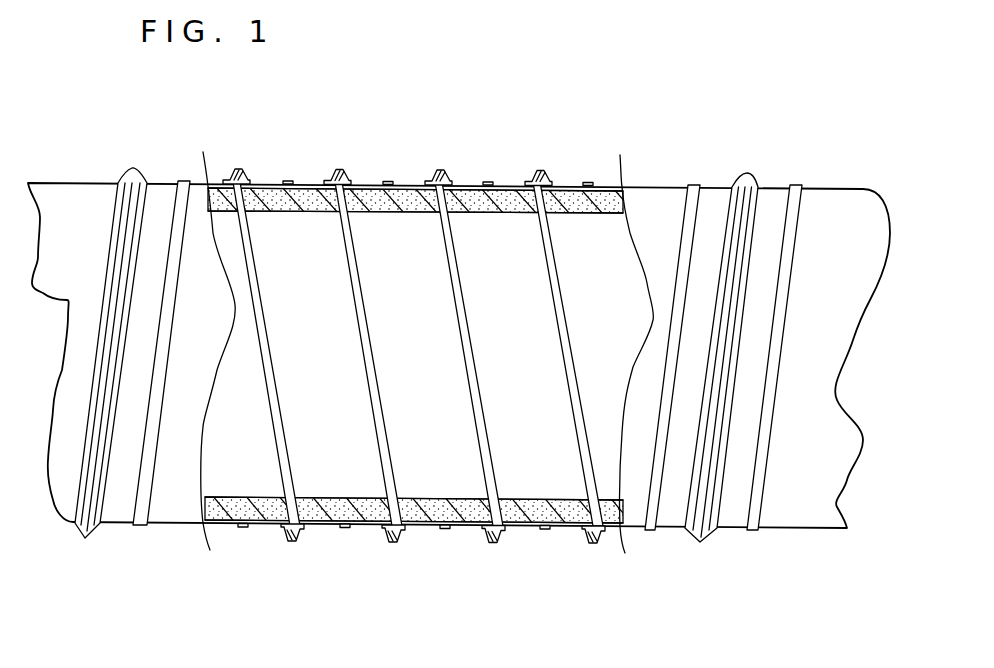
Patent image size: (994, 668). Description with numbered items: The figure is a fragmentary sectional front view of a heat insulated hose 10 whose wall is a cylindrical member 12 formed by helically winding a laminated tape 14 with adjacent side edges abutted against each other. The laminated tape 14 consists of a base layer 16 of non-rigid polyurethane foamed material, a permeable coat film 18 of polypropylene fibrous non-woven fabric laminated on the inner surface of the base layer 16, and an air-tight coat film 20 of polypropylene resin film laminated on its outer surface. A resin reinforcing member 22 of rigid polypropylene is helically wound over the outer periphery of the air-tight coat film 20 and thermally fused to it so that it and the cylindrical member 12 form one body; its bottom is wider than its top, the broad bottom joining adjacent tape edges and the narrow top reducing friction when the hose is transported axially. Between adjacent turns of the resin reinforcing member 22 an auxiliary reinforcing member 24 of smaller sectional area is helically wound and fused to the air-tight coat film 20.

The heat insulated hose 10 is at (278, 101).
The cylindrical member 12 is at (662, 178).
The laminated tape 14 is at (308, 213).
The base layer 16 is at (382, 212).
The permeable coat film 18 is at (400, 212).
The air-tight coat film 20 is at (408, 187).
The resin reinforcing member 22 is at (442, 177).
The auxiliary reinforcing member 24 is at (487, 182).